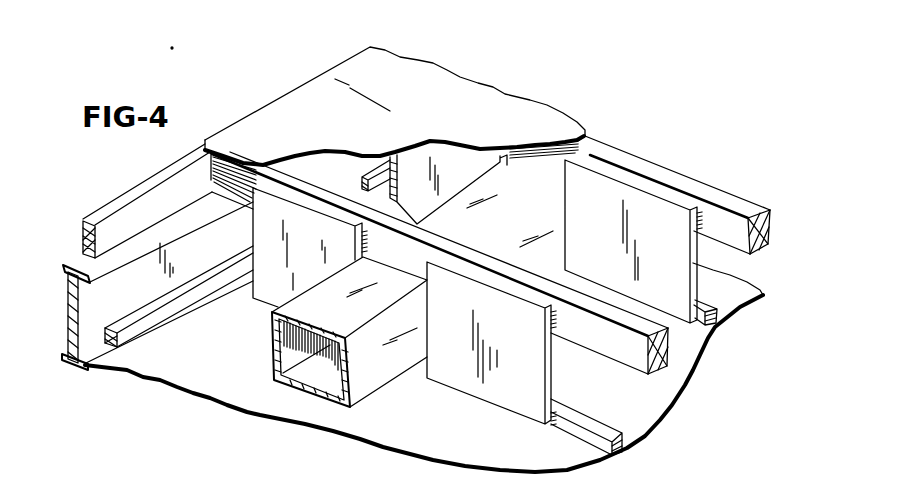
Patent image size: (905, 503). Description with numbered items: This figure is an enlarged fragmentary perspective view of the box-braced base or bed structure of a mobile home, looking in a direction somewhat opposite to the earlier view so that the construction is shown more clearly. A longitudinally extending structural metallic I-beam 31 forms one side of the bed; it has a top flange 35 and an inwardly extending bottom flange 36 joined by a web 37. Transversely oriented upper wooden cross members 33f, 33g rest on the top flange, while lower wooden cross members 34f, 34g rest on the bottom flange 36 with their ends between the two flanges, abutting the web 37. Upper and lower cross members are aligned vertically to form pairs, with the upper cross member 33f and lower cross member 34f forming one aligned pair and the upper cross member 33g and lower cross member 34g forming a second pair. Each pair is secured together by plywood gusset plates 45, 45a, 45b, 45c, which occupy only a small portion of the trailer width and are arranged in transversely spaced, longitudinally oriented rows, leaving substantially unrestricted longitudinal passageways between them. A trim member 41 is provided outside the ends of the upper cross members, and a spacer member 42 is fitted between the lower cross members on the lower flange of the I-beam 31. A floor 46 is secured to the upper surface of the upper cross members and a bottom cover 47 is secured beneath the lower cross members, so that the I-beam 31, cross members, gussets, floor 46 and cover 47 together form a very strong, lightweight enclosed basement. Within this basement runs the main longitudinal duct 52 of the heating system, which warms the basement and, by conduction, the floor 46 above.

The I-beam 31 is at (141, 312).
The upper cross member 33f is at (740, 206).
The upper cross member 33g is at (667, 360).
The lower cross member 34f is at (712, 320).
The lower cross member 34g is at (641, 441).
The top flange 35 is at (77, 264).
The bottom flange 36 is at (86, 368).
The web 37 is at (69, 312).
The trim member 41 is at (160, 187).
The spacer member 42 is at (147, 323).
The gusset plate 45 is at (277, 290).
The gusset plate 45a is at (470, 390).
The gusset plate 45b is at (460, 167).
The gusset plate 45c is at (653, 207).
The floor 46 is at (318, 88).
The bottom cover 47 is at (217, 390).
The main longitudinal duct 52 is at (330, 390).